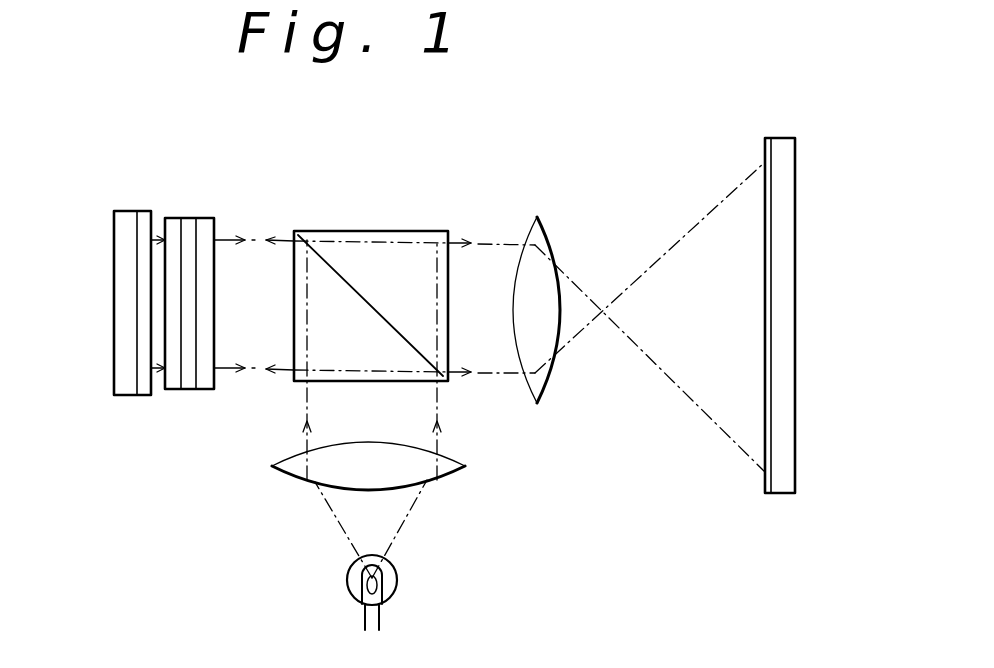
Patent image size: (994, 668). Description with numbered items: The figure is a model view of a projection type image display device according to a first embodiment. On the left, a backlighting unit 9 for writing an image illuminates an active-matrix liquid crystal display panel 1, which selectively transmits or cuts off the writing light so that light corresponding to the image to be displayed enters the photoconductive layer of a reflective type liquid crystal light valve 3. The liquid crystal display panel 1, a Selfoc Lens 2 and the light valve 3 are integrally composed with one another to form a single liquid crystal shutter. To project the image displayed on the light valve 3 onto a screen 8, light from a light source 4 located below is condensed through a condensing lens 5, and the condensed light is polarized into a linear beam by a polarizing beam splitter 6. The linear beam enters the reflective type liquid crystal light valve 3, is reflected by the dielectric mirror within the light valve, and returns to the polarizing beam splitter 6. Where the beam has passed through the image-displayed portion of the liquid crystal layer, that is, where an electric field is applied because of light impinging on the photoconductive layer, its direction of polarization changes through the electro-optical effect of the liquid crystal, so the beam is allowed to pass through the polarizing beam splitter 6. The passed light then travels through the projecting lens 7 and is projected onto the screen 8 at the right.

The active-matrix liquid crystal display panel 1 is at (172, 218).
The Selfoc Lens 2 is at (190, 218).
The reflective type liquid crystal light valve 3 is at (205, 218).
The light source 4 is at (398, 586).
The condensing lens 5 is at (455, 466).
The polarizing beam splitter 6 is at (337, 231).
The projecting lens 7 is at (532, 222).
The screen 8 is at (765, 145).
The backlighting unit 9 is at (122, 211).